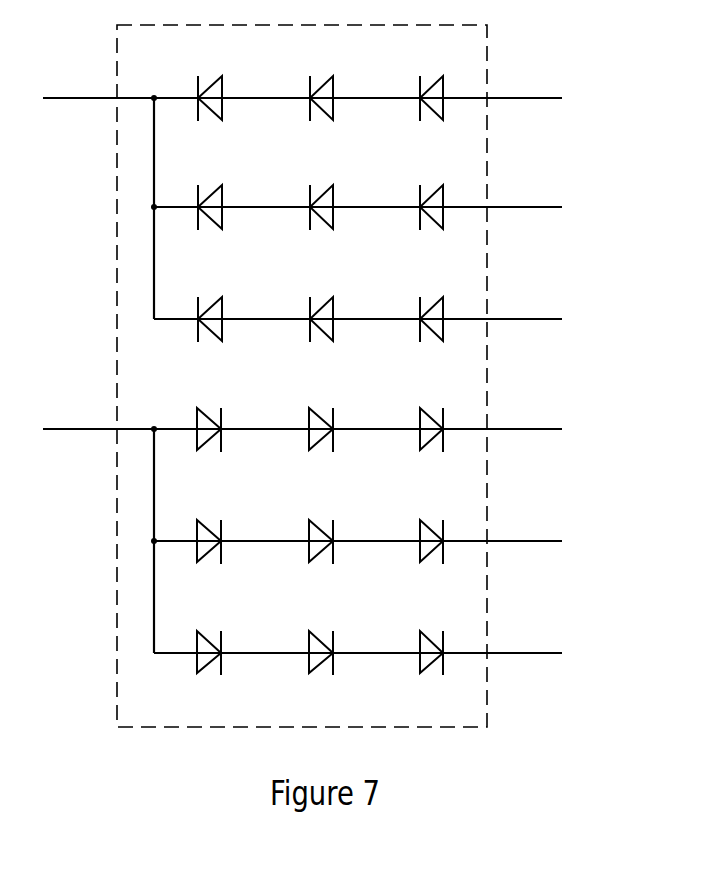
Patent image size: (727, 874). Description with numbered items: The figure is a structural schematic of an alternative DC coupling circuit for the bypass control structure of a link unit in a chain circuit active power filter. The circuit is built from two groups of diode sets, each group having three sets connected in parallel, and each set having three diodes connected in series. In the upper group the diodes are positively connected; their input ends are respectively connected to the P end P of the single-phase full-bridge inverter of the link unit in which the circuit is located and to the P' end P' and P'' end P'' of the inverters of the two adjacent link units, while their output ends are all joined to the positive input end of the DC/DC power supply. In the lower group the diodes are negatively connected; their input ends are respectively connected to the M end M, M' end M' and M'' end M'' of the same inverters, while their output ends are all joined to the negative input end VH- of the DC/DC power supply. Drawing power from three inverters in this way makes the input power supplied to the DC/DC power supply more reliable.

The V1- input end VH- is at (100, 524).
The P end P is at (358, 91).
The P' end P' is at (358, 200).
The P'' end P'' is at (358, 312).
The M end M is at (358, 423).
The M' end M' is at (358, 535).
The M'' end M'' is at (358, 646).